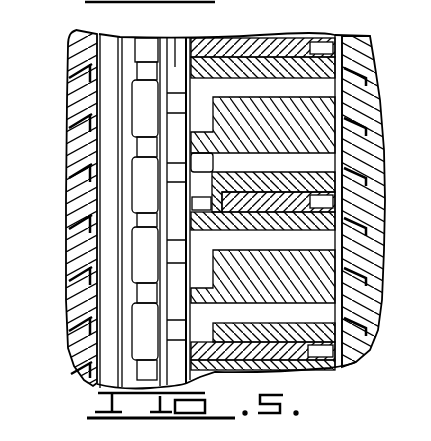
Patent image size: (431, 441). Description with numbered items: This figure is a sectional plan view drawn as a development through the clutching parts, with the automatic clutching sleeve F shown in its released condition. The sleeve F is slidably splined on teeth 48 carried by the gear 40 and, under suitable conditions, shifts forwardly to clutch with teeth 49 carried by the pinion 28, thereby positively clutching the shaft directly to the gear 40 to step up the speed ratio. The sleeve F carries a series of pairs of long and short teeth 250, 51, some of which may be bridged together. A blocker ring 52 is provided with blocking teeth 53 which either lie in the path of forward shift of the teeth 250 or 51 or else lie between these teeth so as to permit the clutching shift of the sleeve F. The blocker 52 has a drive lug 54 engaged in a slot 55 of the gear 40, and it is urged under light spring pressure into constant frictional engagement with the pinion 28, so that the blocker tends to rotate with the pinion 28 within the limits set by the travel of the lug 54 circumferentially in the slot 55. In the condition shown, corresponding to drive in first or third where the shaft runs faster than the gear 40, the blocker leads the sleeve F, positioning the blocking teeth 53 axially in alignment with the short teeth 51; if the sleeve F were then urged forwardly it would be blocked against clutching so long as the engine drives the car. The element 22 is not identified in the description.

The pinion 28 is at (80, 52).
The gear 40 is at (365, 72).
The teeth 49 is at (147, 72).
The blocker ring 52 is at (178, 39).
The blocking teeth 53 is at (173, 245).
The drive lug 54 is at (192, 201).
The slot 55 is at (209, 165).
The short teeth 51 is at (247, 183).
The long teeth 250 is at (245, 217).
The teeth 48 is at (308, 200).
The automatic clutching sleeve F is at (328, 116).
The adjacent part 22 is at (419, 295).